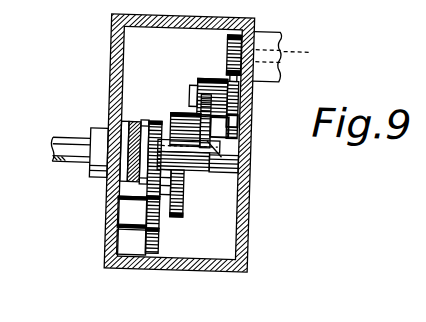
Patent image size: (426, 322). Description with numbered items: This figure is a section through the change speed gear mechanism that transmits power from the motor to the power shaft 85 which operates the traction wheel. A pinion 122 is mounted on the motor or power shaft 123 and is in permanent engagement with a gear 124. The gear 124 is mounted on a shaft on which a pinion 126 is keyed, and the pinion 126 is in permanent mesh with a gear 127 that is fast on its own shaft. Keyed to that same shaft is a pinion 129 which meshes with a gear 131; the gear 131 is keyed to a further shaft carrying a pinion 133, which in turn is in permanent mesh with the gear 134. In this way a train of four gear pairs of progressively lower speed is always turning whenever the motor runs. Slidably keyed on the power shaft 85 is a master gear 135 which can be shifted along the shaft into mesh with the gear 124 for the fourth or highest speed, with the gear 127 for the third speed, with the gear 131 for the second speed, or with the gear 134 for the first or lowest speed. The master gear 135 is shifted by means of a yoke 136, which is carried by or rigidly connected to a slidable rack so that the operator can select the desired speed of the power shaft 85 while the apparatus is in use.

The power shaft 85 is at (79, 166).
The pinion 122 is at (224, 37).
The motor or power shaft 123 is at (302, 58).
The gear 124 is at (252, 124).
The pinion 126 is at (215, 78).
The gear 127 is at (229, 171).
The pinion 129 is at (179, 113).
The gear 131 is at (186, 216).
The pinion 133 is at (168, 205).
The gear 134 is at (159, 244).
The master gear 135 is at (154, 122).
The yoke 136 is at (131, 115).